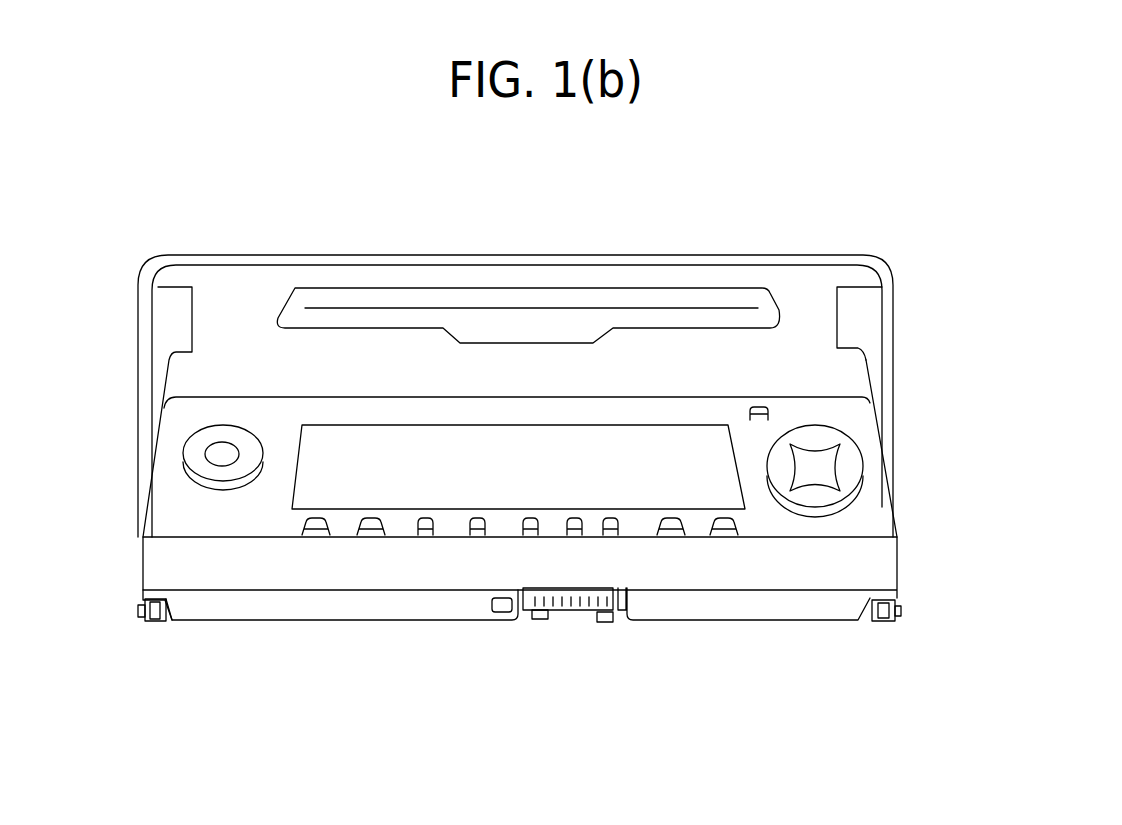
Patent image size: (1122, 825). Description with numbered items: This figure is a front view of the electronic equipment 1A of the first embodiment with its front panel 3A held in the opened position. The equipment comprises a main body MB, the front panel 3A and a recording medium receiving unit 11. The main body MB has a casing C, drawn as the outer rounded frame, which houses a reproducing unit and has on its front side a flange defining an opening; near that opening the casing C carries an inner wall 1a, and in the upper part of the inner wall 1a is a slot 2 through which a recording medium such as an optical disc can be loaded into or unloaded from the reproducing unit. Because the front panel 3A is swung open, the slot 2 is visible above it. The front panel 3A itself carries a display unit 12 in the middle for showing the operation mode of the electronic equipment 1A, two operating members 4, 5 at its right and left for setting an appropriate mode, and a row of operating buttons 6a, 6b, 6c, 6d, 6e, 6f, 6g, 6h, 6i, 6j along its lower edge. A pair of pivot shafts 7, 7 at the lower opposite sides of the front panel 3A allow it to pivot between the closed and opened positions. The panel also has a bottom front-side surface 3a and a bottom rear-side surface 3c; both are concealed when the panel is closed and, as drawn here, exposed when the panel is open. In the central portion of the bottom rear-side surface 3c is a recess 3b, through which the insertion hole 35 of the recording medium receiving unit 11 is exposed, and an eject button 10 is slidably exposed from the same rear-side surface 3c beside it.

The casing C is at (332, 255).
The main body MB is at (853, 246).
The electronic equipment 1A is at (741, 242).
The inner wall 1a is at (392, 368).
The slot 2 is at (522, 303).
The front panel 3A is at (880, 507).
The bottom front-side surface 3a is at (877, 568).
The recess 3b is at (622, 622).
The bottom rear-side surface 3c is at (208, 612).
The operating member 4 is at (858, 451).
The operating member 5 is at (184, 462).
The operating button 6a is at (766, 405).
The operating button 6b is at (318, 537).
The operating button 6c is at (370, 537).
The operating button 6d is at (425, 537).
The operating button 6e is at (477, 537).
The operating button 6f is at (532, 537).
The operating button 6g is at (575, 537).
The operating button 6h is at (612, 537).
The operating button 6i is at (668, 537).
The operating button 6j is at (722, 537).
The pivot shaft 7 is at (157, 625).
The eject button 10 is at (502, 612).
The recording medium receiving unit 11 is at (604, 622).
The display unit 12 is at (534, 474).
The insertion hole 35 is at (566, 610).